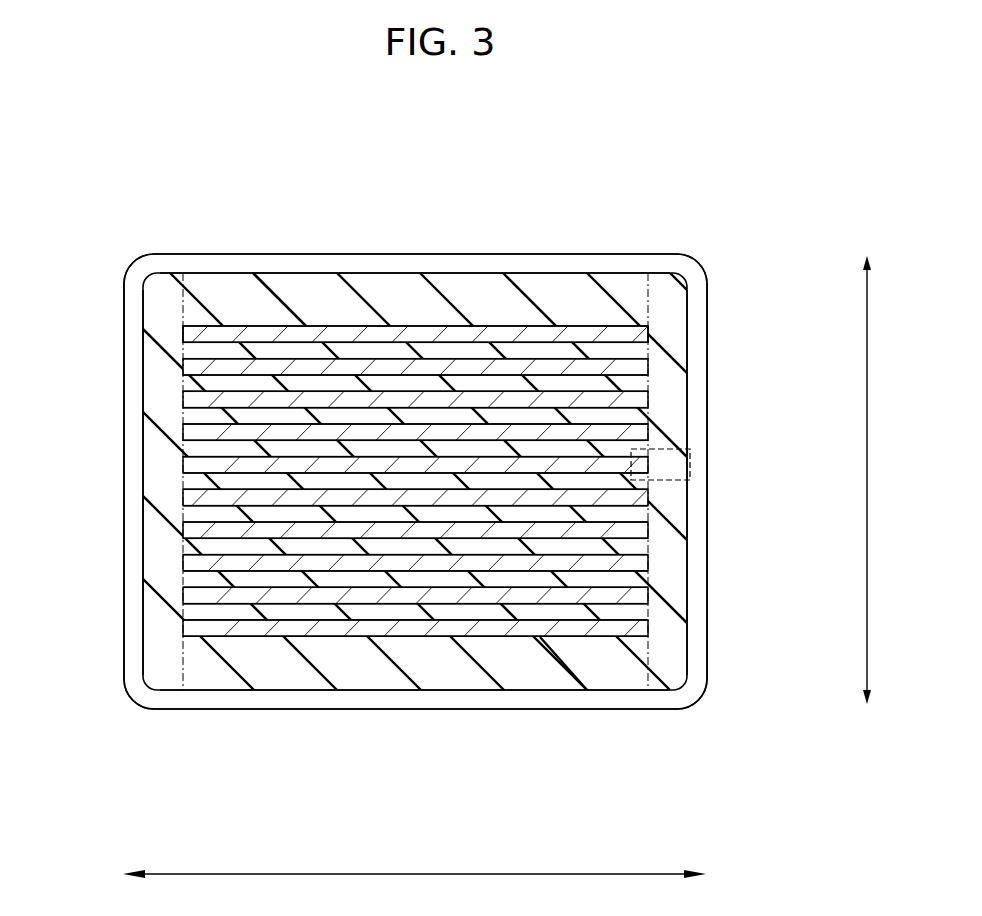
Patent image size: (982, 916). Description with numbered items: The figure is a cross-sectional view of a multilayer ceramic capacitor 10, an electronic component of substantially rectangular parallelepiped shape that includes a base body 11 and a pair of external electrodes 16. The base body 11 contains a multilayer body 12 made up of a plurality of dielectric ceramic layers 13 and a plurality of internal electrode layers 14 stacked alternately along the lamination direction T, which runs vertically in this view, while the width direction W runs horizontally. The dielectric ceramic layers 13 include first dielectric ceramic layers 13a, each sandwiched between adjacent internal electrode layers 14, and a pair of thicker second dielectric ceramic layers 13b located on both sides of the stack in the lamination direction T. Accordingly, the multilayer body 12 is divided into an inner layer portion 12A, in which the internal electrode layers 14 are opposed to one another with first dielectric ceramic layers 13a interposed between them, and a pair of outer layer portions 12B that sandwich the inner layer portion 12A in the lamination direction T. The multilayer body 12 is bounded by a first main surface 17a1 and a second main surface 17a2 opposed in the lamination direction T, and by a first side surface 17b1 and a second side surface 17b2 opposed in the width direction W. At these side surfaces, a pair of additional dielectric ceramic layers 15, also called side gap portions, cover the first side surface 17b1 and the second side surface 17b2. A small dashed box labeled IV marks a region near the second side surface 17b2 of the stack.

The multilayer ceramic capacitor 10 is at (688, 198).
The base body 11 is at (585, 255).
The multilayer body 12 is at (502, 212).
The inner layer portion 12A is at (240, 305).
The outer layer portion 12B is at (521, 262).
The dielectric ceramic layer 13 is at (405, 295).
The first dielectric ceramic layer 13a is at (210, 417).
The second dielectric ceramic layer 13b is at (287, 278).
The internal electrode layer 14 is at (488, 330).
The additional dielectric ceramic layer 15 is at (157, 487).
The external electrode 16 is at (133, 580).
The first main surface 17a1 is at (313, 273).
The second main surface 17a2 is at (400, 690).
The first side surface 17b1 is at (183, 543).
The second side surface 17b2 is at (649, 383).
The enlarged region IV is at (692, 466).
The lamination direction T is at (877, 480).
The width direction W is at (414, 887).